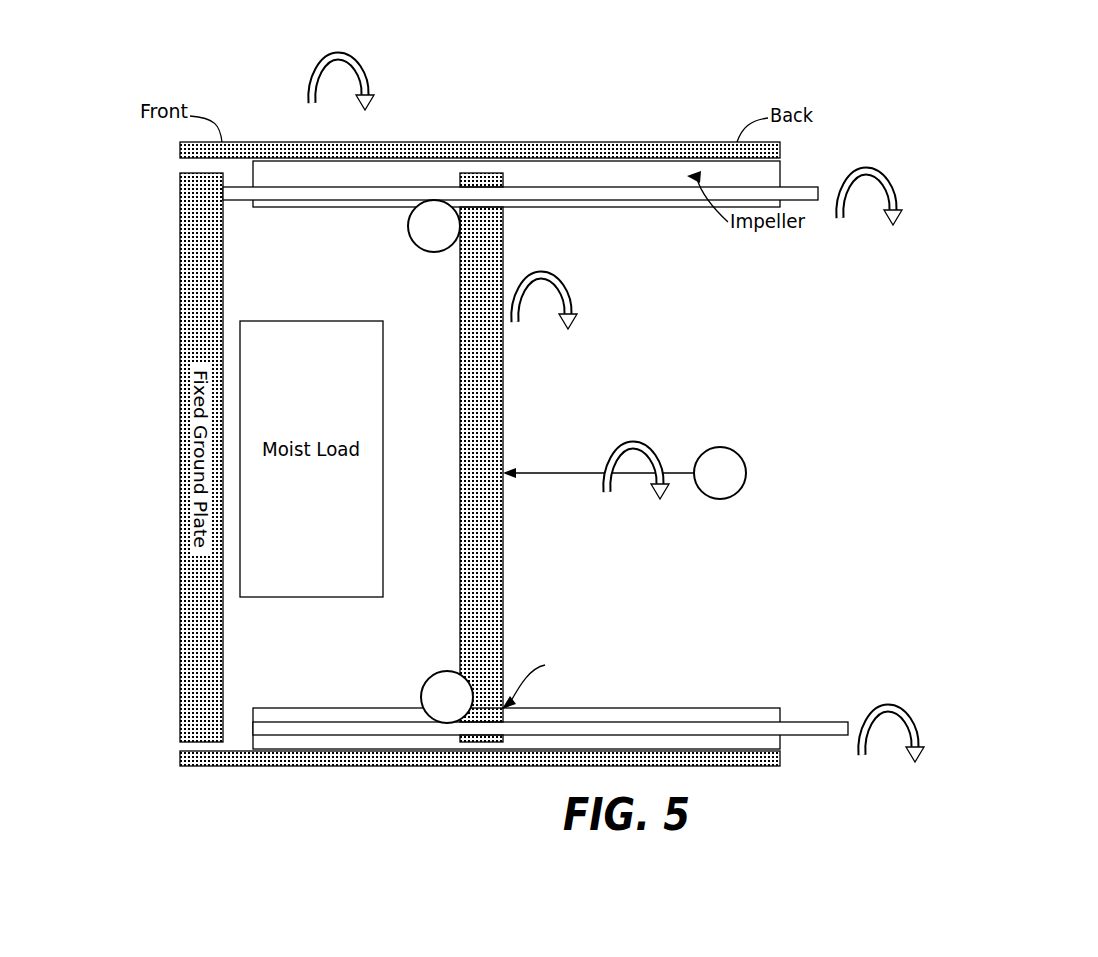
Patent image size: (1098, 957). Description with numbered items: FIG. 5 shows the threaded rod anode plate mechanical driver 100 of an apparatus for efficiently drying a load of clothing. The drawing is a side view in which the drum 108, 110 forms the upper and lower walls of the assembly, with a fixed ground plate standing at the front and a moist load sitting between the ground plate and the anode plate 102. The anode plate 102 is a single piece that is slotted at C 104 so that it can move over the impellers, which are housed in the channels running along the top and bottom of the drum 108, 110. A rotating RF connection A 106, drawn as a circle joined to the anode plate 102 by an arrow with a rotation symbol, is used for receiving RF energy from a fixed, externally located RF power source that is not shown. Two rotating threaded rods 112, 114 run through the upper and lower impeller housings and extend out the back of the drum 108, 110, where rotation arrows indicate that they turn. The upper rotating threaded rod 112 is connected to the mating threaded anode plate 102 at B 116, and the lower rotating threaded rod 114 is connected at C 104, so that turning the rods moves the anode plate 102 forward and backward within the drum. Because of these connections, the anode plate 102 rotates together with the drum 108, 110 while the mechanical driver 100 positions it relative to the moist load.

The threaded rod anode plate mechanical driver 100 is at (904, 78).
The anode plate 102 is at (504, 325).
The slot C 104 is at (440, 672).
The rotating RF connection A 106 is at (716, 447).
The drum 108 is at (336, 768).
The drum 110 is at (305, 142).
The rotating threaded rod 112 is at (792, 187).
The rotating threaded rod 114 is at (796, 722).
The connection point B 116 is at (409, 233).